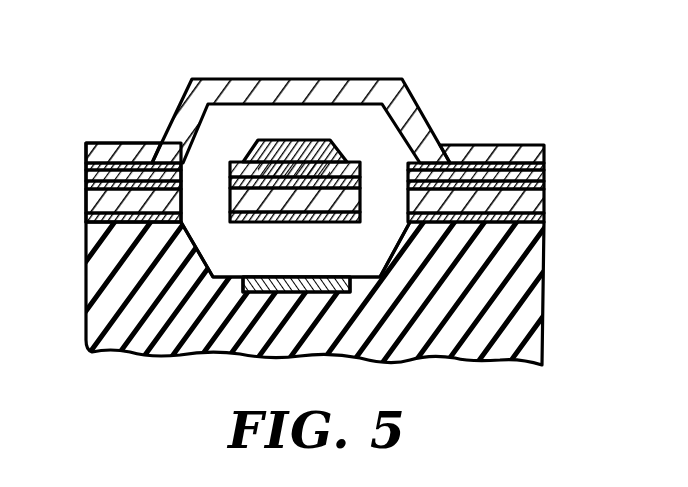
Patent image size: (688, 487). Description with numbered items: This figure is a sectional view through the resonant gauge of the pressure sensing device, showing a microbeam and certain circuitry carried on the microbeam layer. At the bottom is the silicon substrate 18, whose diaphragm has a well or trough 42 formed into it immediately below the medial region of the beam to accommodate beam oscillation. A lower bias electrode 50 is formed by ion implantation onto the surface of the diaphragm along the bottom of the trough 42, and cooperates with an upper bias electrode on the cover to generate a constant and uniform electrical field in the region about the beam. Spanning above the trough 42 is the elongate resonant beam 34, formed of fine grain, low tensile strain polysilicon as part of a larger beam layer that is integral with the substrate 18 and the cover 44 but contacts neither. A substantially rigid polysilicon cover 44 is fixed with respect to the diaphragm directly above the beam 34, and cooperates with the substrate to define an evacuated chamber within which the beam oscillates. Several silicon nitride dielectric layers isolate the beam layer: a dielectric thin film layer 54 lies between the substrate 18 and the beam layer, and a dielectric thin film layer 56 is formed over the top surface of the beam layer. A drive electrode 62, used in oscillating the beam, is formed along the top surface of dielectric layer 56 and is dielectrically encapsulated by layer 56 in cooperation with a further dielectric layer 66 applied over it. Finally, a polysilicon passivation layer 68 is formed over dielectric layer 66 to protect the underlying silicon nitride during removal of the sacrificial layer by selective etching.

The silicon substrate 18 is at (528, 305).
The resonant beam 34 is at (84, 202).
The trough 42 is at (210, 262).
The cover 44 is at (306, 92).
The lower bias electrode 50 is at (303, 276).
The dielectric thin film layer 54 is at (544, 220).
The dielectric thin film layer 56 is at (544, 190).
The drive electrode 62 is at (260, 143).
The dielectric layer 66 is at (84, 176).
The polysilicon passivation layer 68 is at (544, 157).